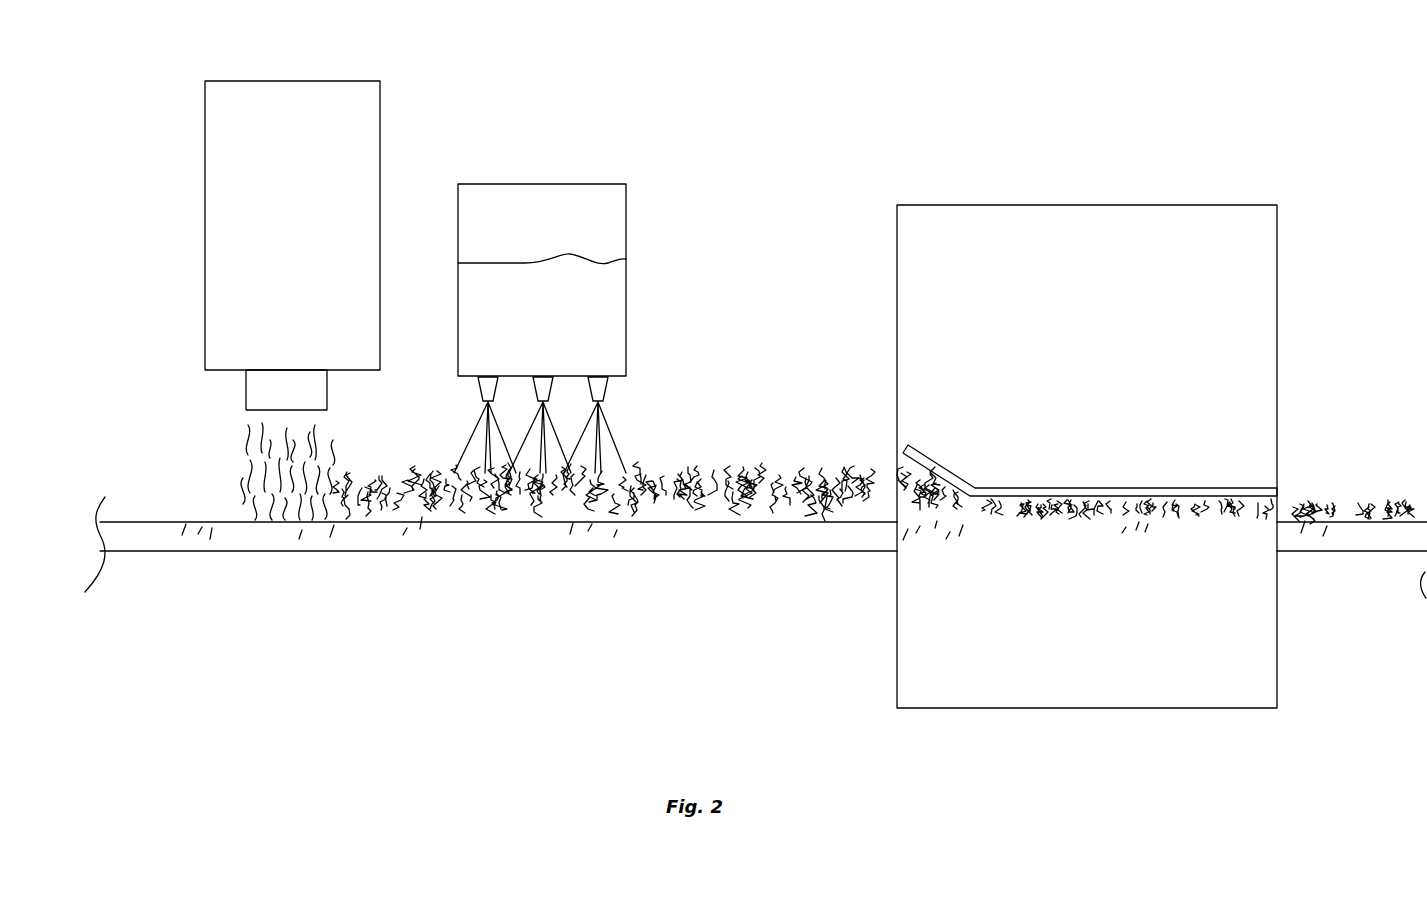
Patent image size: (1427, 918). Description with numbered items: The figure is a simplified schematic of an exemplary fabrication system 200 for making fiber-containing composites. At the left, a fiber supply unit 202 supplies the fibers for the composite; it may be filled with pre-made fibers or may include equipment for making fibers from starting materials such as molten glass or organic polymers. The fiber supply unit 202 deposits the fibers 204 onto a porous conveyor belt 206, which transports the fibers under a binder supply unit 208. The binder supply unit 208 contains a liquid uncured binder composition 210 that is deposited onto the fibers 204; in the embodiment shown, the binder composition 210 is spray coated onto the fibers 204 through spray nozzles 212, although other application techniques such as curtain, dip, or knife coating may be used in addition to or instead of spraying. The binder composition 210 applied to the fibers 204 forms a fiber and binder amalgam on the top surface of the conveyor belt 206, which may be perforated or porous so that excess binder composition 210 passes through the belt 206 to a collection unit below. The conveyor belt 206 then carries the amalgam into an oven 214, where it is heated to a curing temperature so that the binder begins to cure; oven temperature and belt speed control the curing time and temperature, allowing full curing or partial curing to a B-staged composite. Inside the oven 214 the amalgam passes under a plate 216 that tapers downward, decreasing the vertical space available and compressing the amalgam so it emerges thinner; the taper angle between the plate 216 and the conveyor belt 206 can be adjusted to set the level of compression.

The fabrication system 200 is at (217, 47).
The fiber supply unit 202 is at (380, 137).
The fibers 204 is at (233, 455).
The porous conveyor belt 206 is at (272, 542).
The binder supply unit 208 is at (626, 222).
The binder composition 210 is at (600, 325).
The spray nozzles 212 is at (607, 394).
The oven 214 is at (1277, 271).
The plate 216 is at (955, 470).